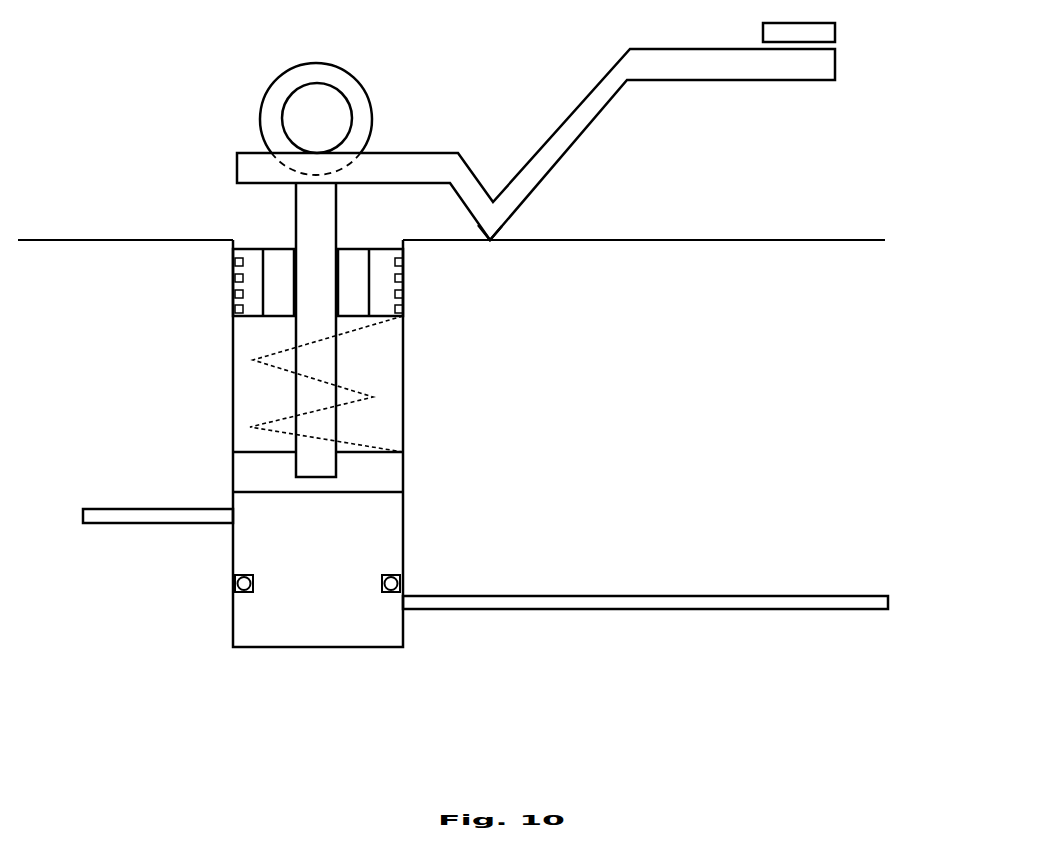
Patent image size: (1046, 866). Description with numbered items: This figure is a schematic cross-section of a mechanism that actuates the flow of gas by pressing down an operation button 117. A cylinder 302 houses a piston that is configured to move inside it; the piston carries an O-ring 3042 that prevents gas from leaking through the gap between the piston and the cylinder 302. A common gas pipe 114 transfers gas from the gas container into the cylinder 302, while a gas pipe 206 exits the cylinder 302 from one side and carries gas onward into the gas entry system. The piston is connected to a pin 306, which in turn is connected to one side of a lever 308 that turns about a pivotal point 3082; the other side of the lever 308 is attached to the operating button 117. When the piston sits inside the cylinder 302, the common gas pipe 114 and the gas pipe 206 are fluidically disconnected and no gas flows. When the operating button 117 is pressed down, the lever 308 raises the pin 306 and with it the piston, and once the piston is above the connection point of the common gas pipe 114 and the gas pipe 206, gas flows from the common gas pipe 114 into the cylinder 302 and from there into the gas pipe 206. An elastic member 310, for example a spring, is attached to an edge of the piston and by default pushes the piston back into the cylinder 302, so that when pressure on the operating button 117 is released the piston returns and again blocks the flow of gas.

The operation button 117 is at (837, 32).
The lever 308 is at (392, 153).
The pivotal point 3082 is at (490, 240).
The pin 306 is at (292, 220).
The cylinder 302 is at (237, 408).
The elastic member 310 is at (373, 397).
The gas pipe 206 is at (120, 520).
The O-ring 3042 is at (233, 593).
The common gas pipe 114 is at (693, 607).